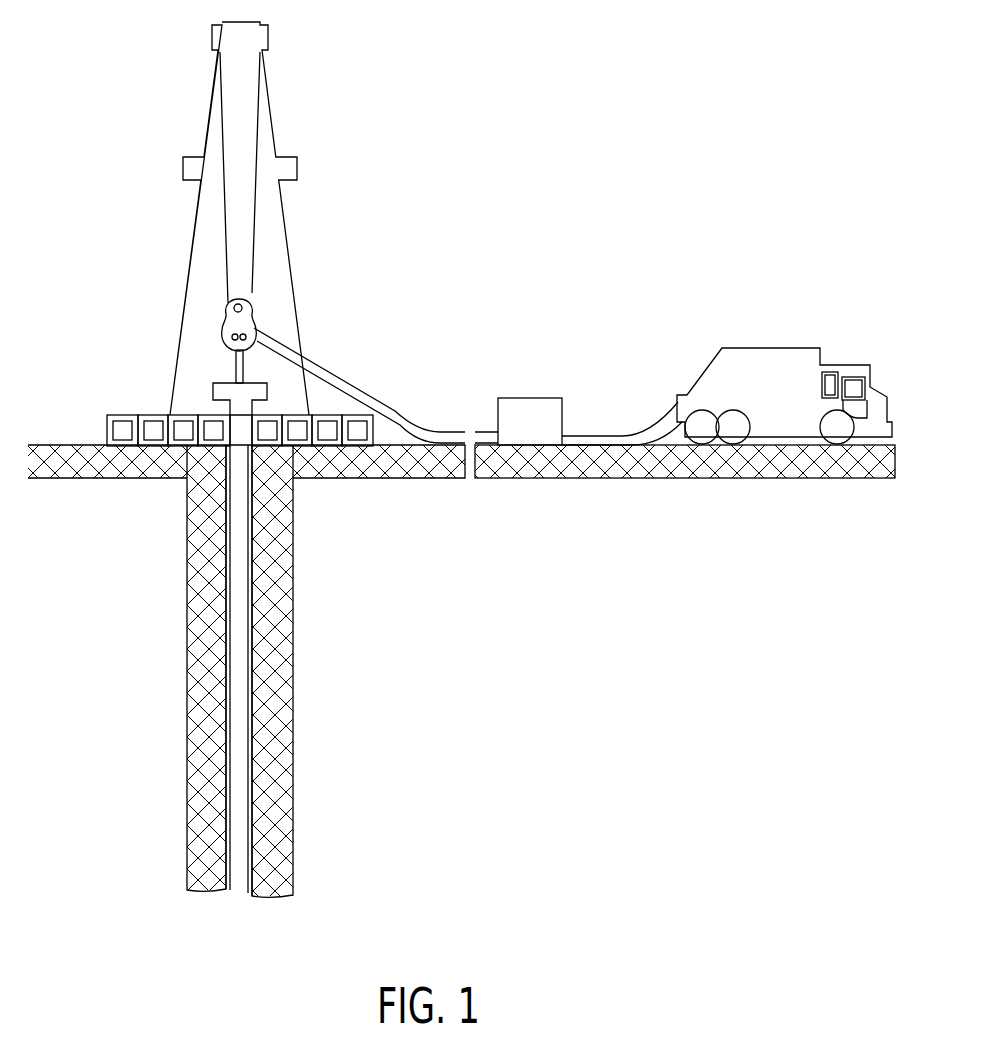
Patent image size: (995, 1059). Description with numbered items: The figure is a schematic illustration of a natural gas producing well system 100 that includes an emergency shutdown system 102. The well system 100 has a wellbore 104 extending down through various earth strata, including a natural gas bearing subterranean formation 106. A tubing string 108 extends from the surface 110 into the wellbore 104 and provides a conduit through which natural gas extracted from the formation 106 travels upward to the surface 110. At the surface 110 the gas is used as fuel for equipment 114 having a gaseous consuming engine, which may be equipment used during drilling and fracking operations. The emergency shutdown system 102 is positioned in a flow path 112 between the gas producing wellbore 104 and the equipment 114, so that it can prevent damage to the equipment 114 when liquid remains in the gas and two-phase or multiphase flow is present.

The well system 100 is at (94, 179).
The emergency shutdown system 102 is at (528, 398).
The wellbore 104 is at (210, 508).
The subterranean formation 106 is at (195, 592).
The tubing string 108 is at (240, 572).
The surface 110 is at (62, 445).
The flow path 112 is at (595, 435).
The equipment 114 is at (773, 348).